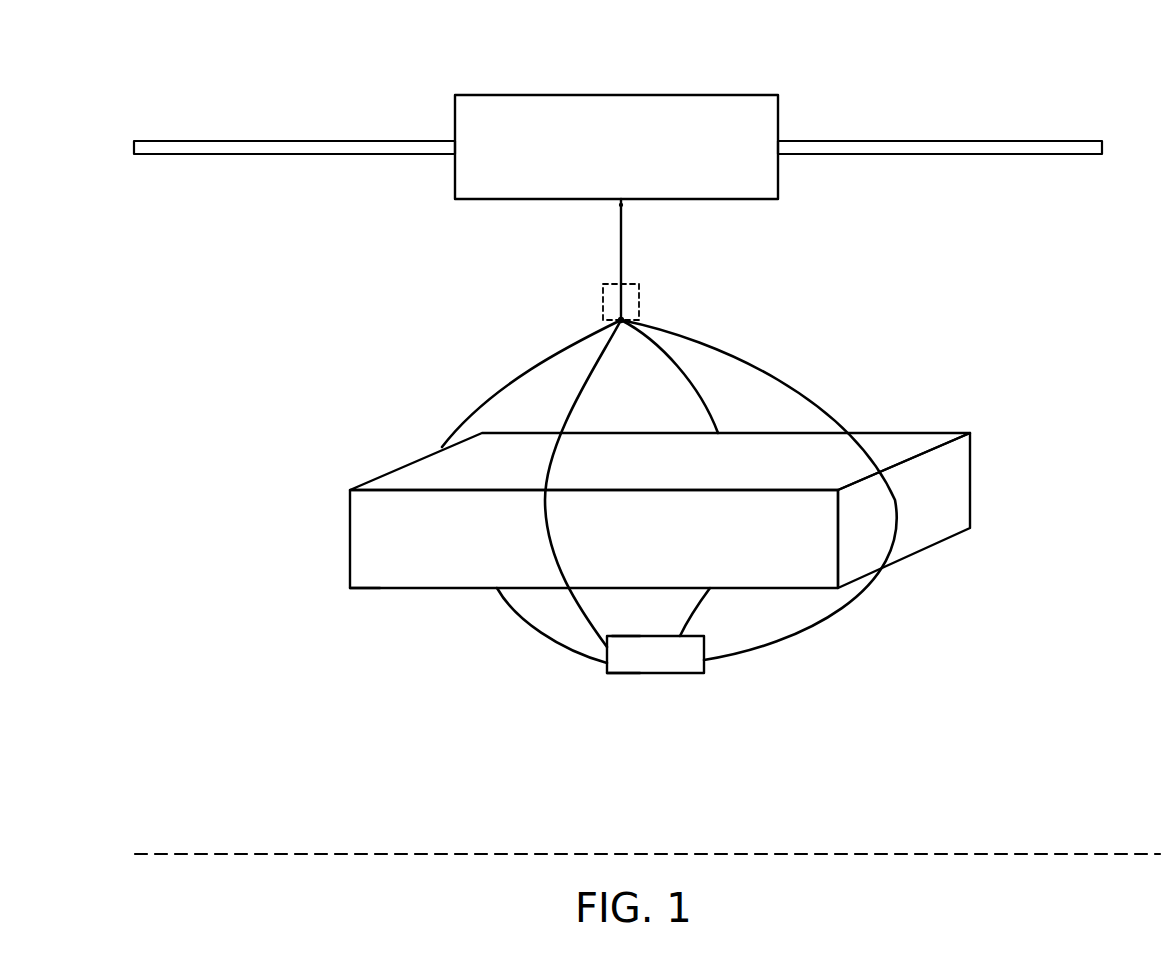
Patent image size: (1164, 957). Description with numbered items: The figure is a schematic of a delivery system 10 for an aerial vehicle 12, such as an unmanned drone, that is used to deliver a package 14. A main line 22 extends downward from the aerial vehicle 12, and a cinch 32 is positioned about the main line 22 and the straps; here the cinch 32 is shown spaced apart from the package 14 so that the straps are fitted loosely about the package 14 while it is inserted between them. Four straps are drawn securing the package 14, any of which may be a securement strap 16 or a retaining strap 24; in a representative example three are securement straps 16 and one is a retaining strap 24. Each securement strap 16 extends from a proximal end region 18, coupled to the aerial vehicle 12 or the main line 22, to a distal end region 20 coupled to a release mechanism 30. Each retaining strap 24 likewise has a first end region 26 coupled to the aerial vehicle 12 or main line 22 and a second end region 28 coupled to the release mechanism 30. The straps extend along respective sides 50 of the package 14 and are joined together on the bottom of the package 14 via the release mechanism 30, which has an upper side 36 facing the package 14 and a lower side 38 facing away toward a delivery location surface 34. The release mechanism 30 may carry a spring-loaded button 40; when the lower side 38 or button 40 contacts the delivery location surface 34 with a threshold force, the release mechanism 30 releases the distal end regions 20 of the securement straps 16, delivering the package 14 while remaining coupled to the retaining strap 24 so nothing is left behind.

The delivery system 10 is at (992, 32).
The aerial vehicle 12 is at (878, 66).
The package 14 is at (943, 510).
The securement straps 16 is at (619, 255).
The proximal end region 18 is at (716, 307).
The distal end region 20 is at (620, 669).
The main line 22 is at (622, 258).
The retaining strap 24 is at (592, 392).
The first end region 26 is at (660, 315).
The second end region 28 is at (678, 609).
The release mechanism 30 is at (652, 655).
The cinch 32 is at (602, 307).
The delivery location surface 34 is at (1068, 853).
The upper side 36 is at (628, 636).
The lower side 38 is at (622, 673).
The button 40 is at (358, 590).
The sides 50 is at (402, 466).